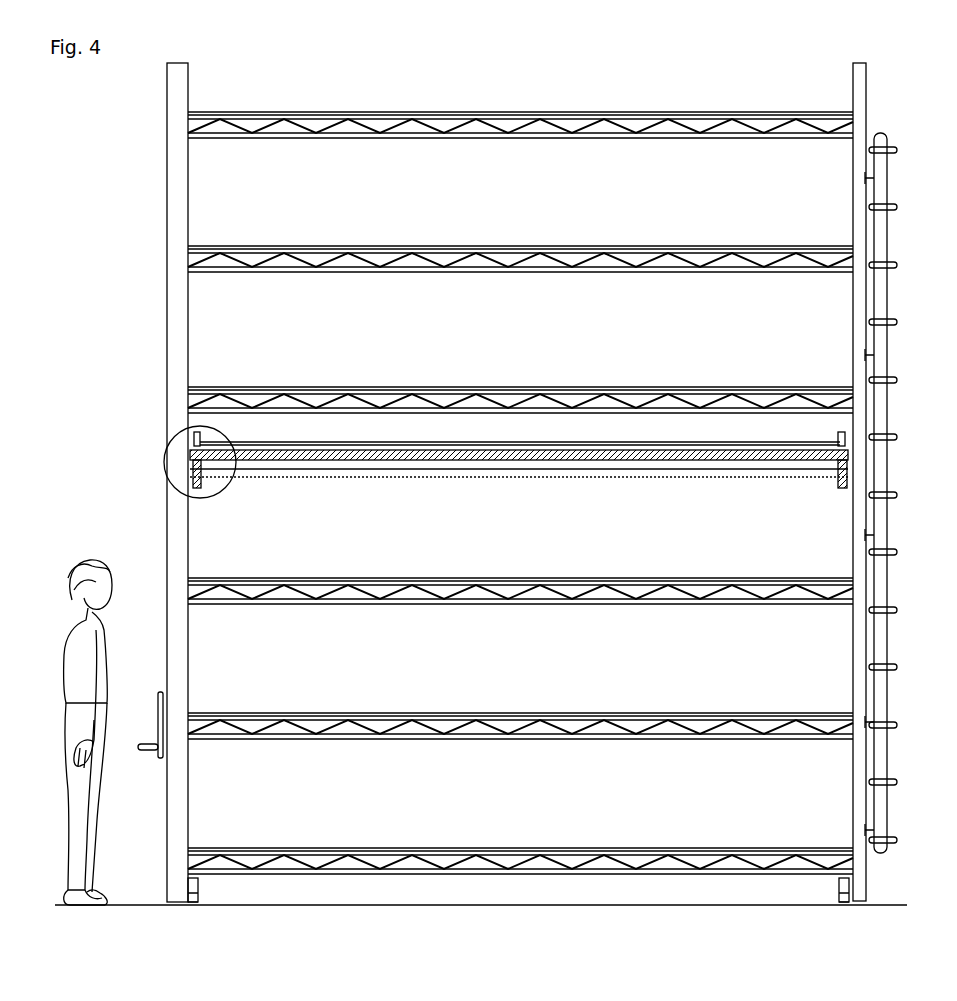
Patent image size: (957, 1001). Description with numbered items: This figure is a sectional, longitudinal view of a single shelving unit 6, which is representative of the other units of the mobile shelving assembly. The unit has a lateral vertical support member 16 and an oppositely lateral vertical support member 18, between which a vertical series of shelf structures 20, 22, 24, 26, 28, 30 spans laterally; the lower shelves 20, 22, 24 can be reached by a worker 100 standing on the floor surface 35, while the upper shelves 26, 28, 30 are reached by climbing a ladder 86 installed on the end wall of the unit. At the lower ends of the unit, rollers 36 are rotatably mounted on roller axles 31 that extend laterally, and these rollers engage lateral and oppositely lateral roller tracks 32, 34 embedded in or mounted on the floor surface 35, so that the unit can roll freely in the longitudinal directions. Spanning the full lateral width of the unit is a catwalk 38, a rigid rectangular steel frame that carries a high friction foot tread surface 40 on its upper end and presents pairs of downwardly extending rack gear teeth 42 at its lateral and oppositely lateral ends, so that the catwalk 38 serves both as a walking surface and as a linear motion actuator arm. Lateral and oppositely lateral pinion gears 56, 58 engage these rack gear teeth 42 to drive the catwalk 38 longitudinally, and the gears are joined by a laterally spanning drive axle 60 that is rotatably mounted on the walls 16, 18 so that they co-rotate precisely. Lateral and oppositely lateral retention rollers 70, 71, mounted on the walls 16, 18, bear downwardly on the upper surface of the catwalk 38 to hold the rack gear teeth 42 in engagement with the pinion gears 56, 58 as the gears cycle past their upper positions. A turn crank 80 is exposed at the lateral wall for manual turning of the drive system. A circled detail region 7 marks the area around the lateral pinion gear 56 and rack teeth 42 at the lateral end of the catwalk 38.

The shelving unit 6 is at (870, 82).
The detail view circle 7 is at (222, 493).
The lateral vertical support member 16 is at (173, 155).
The oppositely lateral vertical support member 18 is at (862, 130).
The shelf structure 20 is at (482, 850).
The shelf structure 22 is at (600, 716).
The shelf structure 24 is at (460, 605).
The shelf structure 26 is at (475, 387).
The shelf structure 28 is at (430, 246).
The shelf structure 30 is at (372, 112).
The roller axle 31 is at (188, 893).
The lateral roller track 32 is at (193, 905).
The oppositely lateral roller track 34 is at (846, 903).
The floor surface 35 is at (495, 941).
The roller 36 is at (198, 888).
The catwalk 38 is at (577, 455).
The foot tread surface 40 is at (500, 443).
The rack gear teeth 42 is at (200, 468).
The lateral pinion gear 56 is at (200, 488).
The oppositely lateral pinion gear 58 is at (846, 488).
The drive axle 60 is at (632, 474).
The lateral retention roller 70 is at (200, 434).
The oppositely lateral retention roller 71 is at (840, 434).
The turn crank 80 is at (150, 752).
The ladder 86 is at (887, 703).
The worker 100 is at (73, 650).